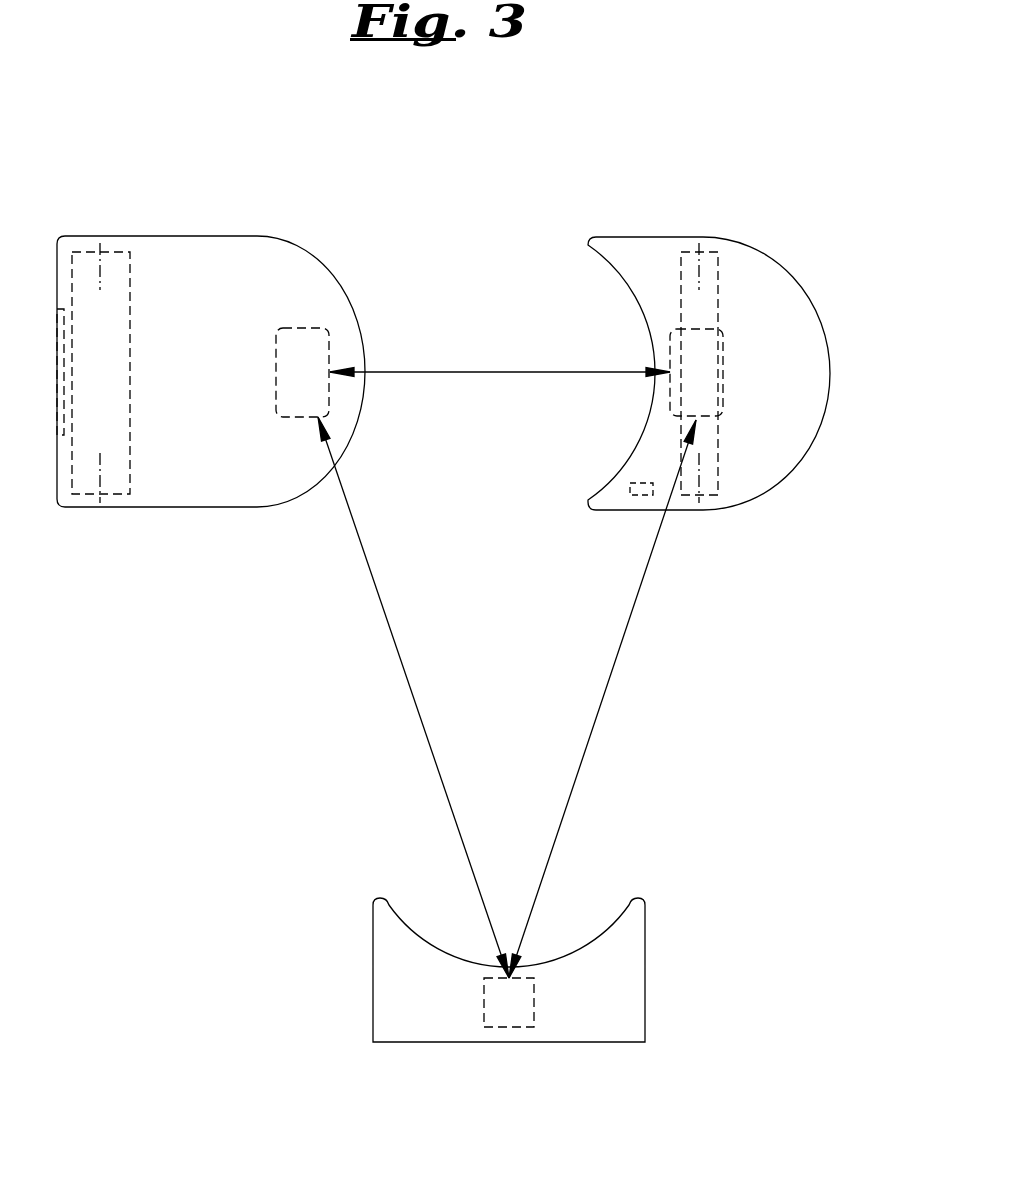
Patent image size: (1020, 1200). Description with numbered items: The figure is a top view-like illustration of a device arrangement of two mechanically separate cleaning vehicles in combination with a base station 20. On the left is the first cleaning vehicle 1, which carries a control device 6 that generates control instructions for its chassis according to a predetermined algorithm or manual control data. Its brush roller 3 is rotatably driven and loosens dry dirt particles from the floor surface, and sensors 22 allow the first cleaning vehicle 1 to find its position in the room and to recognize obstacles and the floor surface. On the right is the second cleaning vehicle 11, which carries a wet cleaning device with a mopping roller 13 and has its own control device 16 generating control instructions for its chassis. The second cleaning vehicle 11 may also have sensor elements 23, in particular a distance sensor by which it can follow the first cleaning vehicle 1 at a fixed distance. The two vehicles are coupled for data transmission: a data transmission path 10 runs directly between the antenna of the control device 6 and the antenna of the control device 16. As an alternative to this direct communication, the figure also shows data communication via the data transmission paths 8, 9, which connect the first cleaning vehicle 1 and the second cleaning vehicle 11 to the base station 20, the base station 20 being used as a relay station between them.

The first cleaning vehicle 1 is at (211, 336).
The brush roller 3 is at (120, 458).
The control device 6 is at (295, 348).
The data transmission path 8 is at (403, 672).
The data transmission path 9 is at (613, 672).
The data transmission path 10 is at (450, 372).
The second cleaning vehicle 11 is at (709, 336).
The mopping roller 13 is at (710, 477).
The control device 16 is at (693, 337).
The base station 20 is at (623, 973).
The sensors 22 is at (60, 410).
The sensor elements 23 is at (643, 494).